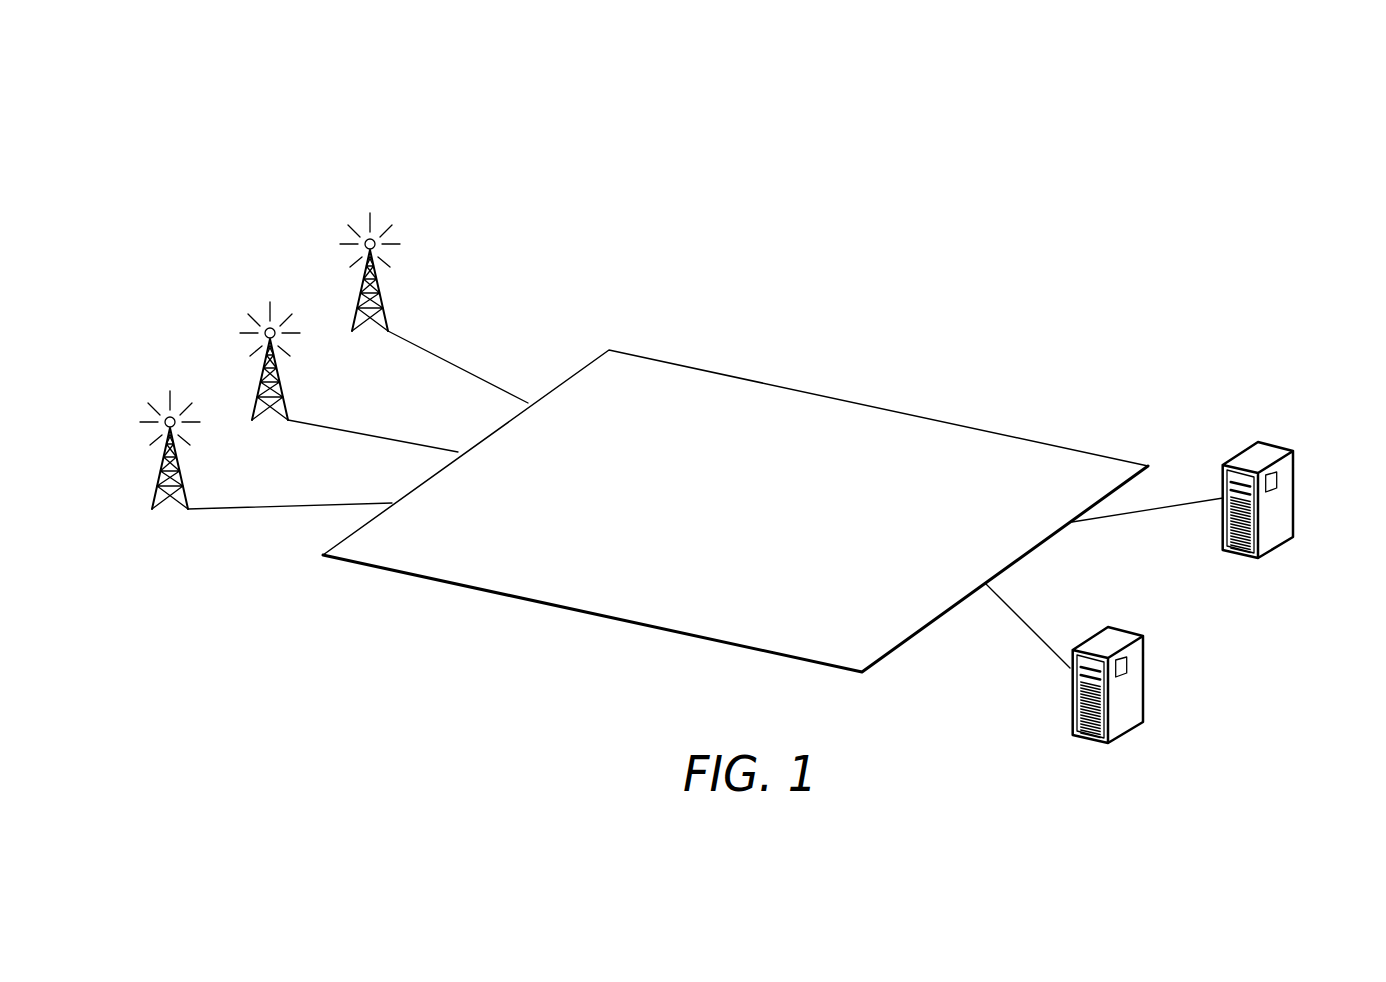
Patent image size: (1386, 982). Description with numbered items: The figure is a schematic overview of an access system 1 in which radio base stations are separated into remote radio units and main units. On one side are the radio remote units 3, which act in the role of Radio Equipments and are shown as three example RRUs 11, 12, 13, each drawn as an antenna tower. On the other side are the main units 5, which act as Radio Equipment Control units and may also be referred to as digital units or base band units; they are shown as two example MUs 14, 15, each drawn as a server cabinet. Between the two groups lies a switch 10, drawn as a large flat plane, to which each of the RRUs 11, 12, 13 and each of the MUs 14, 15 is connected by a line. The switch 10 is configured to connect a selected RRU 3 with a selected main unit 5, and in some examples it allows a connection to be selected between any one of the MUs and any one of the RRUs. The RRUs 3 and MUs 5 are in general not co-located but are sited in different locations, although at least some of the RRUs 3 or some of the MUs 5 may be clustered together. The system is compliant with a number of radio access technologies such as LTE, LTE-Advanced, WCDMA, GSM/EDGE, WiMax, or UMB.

The access system 1 is at (464, 117).
The radio remote units 3 is at (183, 286).
The main units 5 is at (1315, 391).
The switch 10 is at (751, 523).
The RRU 11 is at (383, 305).
The RRU 12 is at (283, 392).
The RRU 13 is at (185, 482).
The MU 14 is at (1293, 462).
The MU 15 is at (1143, 646).